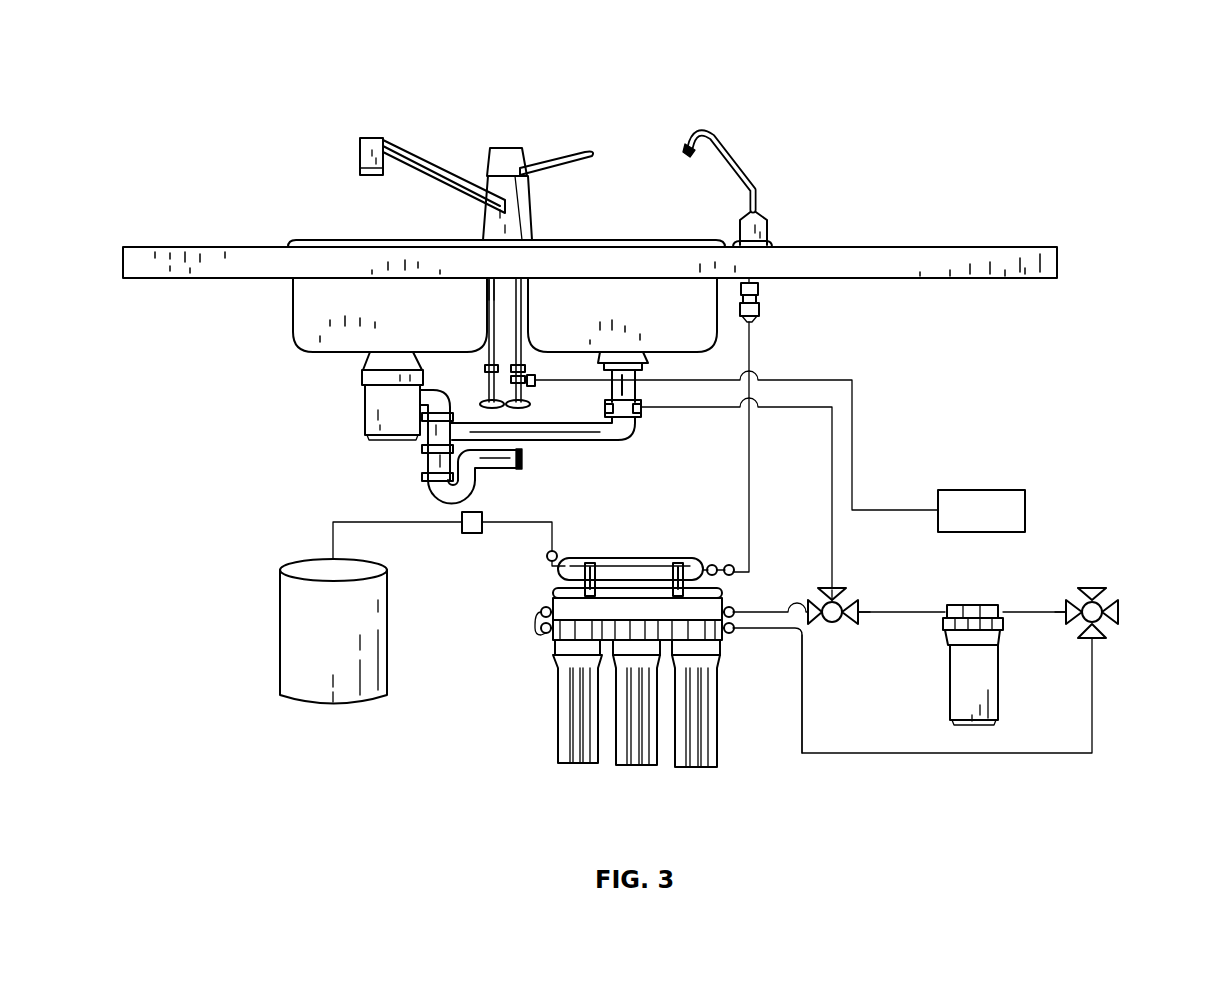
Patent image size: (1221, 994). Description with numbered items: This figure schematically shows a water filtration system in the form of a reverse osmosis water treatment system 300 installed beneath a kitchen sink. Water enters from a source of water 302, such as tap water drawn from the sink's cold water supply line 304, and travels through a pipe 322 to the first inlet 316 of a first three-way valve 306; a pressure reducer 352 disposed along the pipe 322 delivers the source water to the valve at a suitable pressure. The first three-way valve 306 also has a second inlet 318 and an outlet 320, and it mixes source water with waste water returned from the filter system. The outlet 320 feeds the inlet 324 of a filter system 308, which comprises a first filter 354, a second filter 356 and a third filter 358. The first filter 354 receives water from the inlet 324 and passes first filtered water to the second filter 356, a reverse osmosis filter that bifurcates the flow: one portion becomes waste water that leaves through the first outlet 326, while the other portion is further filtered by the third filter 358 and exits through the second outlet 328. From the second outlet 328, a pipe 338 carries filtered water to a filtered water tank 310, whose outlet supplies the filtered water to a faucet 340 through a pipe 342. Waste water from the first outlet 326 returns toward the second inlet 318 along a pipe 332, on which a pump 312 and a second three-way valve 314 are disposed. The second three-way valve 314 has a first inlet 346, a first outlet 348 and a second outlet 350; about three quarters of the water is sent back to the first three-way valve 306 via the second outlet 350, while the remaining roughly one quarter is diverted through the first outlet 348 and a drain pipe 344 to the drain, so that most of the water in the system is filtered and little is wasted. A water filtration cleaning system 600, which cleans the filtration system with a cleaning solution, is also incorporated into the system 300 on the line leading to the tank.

The reverse osmosis water treatment system 300 is at (205, 94).
The source of water 302 is at (535, 380).
The cold water supply line 304 is at (492, 283).
The first three-way valve 306 is at (1108, 598).
The filter system 308 is at (658, 558).
The filtered water tank 310 is at (280, 635).
The pump 312 is at (1000, 675).
The second three-way valve 314 is at (837, 588).
The first inlet 316 is at (1092, 587).
The second inlet 318 is at (1068, 604).
The outlet 320 is at (1095, 640).
The pipe 322 is at (852, 427).
The inlet 324 is at (735, 630).
The first outlet 326 is at (735, 608).
The second outlet 328 is at (547, 558).
The pipe 332 is at (898, 612).
The pipe 338 is at (372, 522).
The faucet 340 is at (740, 160).
The pipe / drain 342 is at (630, 440).
The drain pipe 344 is at (832, 448).
The first inlet 346 is at (802, 635).
The first outlet 348 is at (828, 588).
The second outlet 350 is at (862, 607).
The pressure reducer 352 is at (983, 490).
The first filter 354 is at (720, 750).
The second filter 356 is at (640, 765).
The third filter 358 is at (556, 712).
The water filtration cleaning system 600 is at (462, 527).